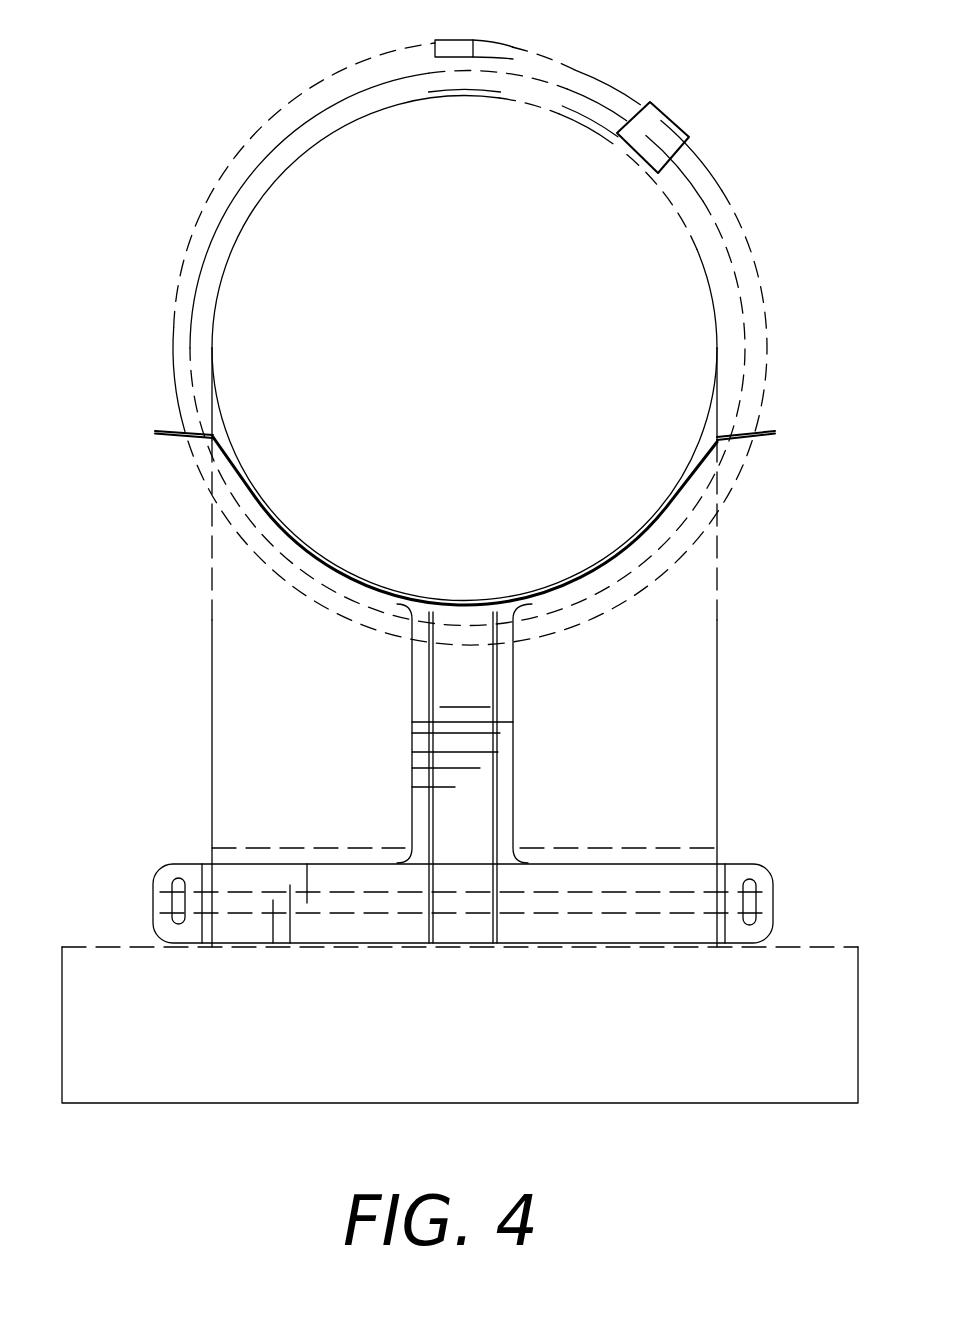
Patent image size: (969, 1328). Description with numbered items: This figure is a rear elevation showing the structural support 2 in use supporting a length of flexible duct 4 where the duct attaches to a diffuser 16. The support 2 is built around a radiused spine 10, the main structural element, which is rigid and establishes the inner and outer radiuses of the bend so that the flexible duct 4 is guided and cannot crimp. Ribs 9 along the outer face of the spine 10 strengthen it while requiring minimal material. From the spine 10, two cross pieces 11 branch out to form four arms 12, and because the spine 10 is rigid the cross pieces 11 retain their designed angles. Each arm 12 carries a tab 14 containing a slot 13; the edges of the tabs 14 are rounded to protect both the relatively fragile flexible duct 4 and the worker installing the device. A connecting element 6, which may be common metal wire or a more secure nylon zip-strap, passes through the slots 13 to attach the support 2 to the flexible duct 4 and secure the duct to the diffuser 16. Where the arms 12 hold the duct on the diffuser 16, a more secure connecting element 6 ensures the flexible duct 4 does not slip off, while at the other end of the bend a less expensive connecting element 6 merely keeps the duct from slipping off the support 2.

The structural support 2 is at (403, 733).
The flexible duct 4 is at (493, 426).
The connecting element 6 is at (650, 103).
The ribs 9 is at (489, 775).
The radiused spine 10 is at (491, 707).
The cross pieces 11 is at (768, 864).
The arms 12 is at (292, 512).
The slot 13 is at (165, 897).
The tab 14 is at (187, 428).
The diffuser 16 is at (493, 1057).